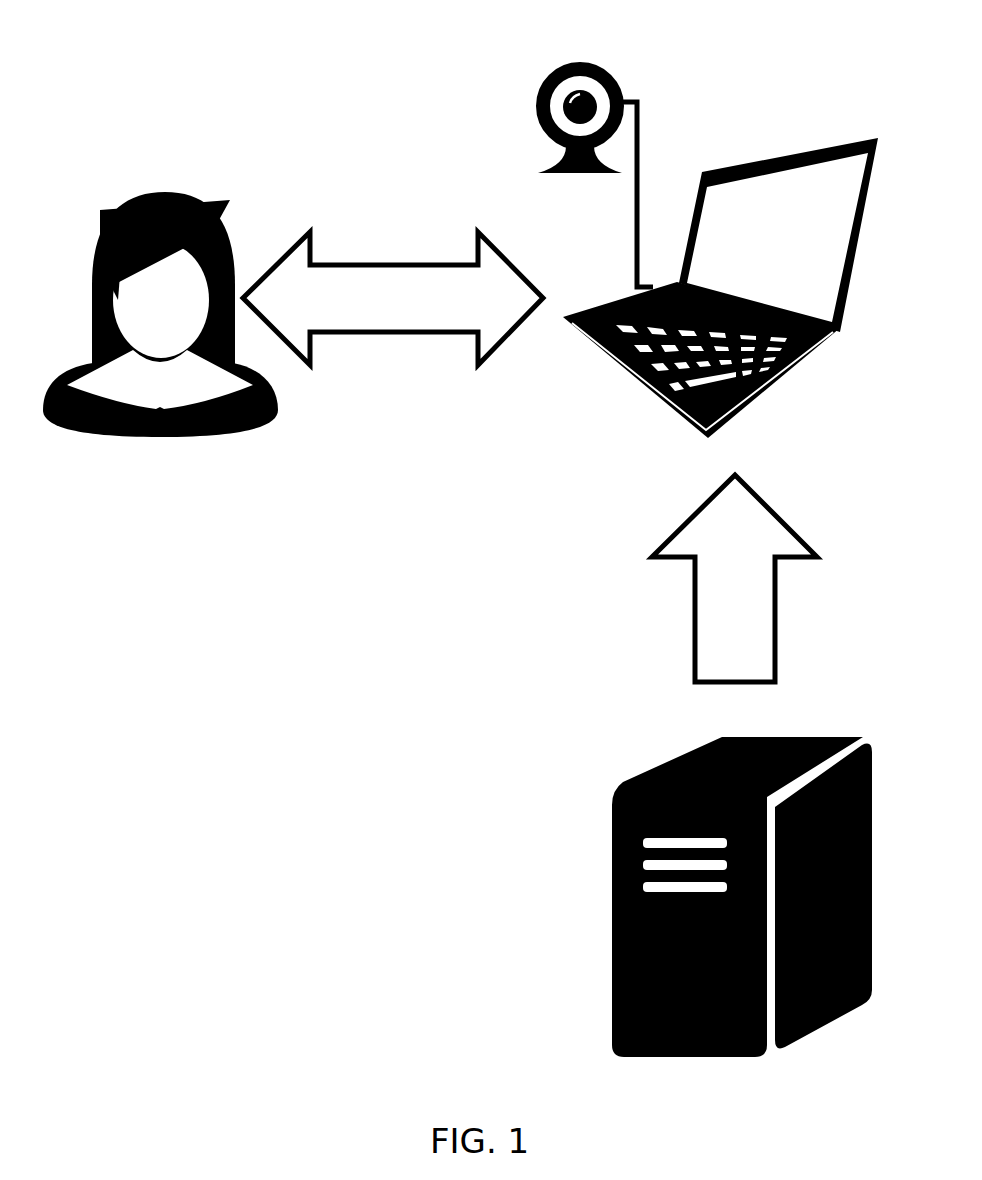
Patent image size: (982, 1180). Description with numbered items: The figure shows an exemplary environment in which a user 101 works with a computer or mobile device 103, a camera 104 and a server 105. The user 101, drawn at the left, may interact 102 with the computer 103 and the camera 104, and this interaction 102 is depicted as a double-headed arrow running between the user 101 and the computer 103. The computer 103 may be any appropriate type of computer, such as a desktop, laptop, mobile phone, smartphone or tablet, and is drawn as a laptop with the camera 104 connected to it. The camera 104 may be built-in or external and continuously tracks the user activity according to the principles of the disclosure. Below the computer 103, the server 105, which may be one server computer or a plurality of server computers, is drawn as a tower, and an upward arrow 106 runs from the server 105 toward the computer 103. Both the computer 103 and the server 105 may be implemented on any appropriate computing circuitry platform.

The user 101 is at (160, 294).
The interaction 102 is at (393, 298).
The computer or mobile device 103 is at (720, 275).
The camera 104 is at (595, 153).
The server 105 is at (742, 875).
The data flow arrow 106 is at (734, 578).